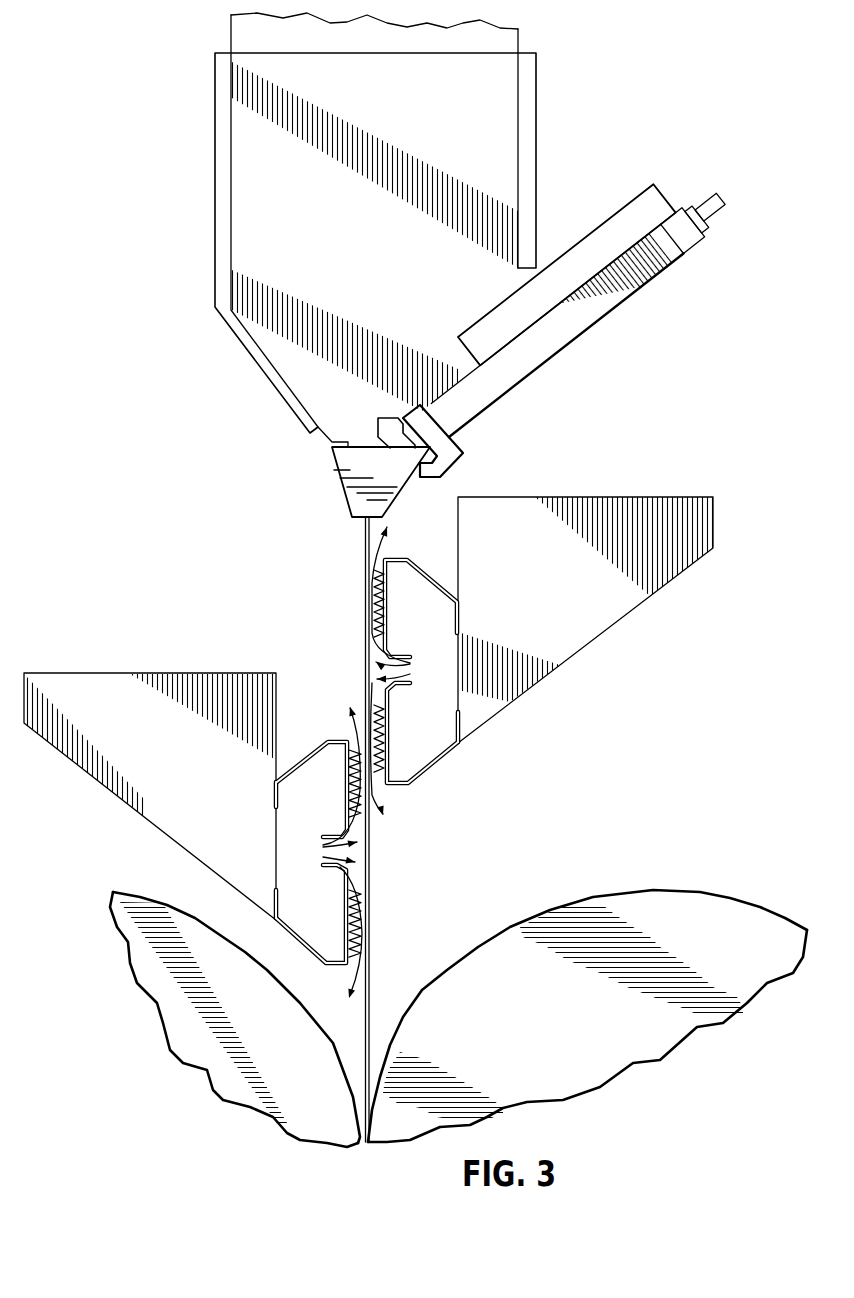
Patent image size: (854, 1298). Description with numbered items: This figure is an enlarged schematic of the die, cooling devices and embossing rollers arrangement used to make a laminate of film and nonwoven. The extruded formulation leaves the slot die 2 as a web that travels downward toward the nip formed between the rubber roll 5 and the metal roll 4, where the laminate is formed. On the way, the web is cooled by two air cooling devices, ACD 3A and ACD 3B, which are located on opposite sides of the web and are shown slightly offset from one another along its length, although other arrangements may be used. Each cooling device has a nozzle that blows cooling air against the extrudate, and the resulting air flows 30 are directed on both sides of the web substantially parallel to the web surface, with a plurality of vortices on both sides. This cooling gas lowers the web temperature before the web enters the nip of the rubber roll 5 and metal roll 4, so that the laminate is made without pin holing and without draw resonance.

The slot die 2 is at (375, 230).
The air cooling device 3A is at (565, 577).
The air cooling device 3B is at (169, 737).
The metal roll 4 is at (700, 892).
The rubber roll 5 is at (142, 897).
The air flows 30 is at (367, 543).